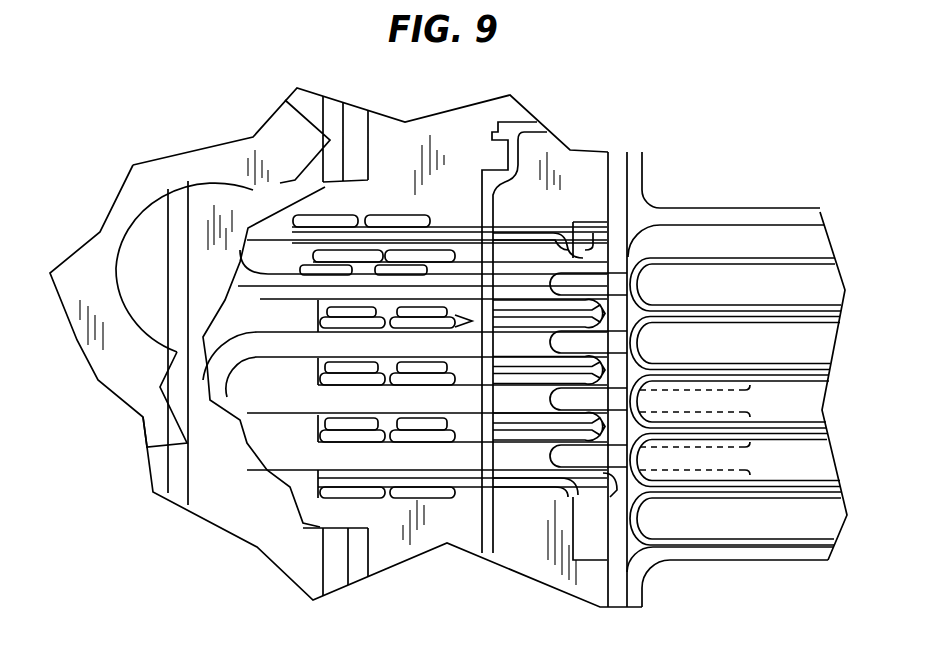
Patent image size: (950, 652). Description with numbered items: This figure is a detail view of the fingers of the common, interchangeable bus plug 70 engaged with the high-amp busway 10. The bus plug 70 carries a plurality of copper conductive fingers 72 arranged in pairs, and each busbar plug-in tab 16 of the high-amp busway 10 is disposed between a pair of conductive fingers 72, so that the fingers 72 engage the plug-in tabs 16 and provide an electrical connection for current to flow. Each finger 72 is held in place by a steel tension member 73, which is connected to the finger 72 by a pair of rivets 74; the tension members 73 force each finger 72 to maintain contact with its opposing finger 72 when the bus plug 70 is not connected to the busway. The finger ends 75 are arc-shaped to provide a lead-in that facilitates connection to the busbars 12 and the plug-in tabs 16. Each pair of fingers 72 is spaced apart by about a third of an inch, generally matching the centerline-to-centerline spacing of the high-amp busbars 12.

The high-amp busway 10 is at (742, 576).
The high-amp busbars 12 is at (830, 292).
The busbar plug-in tabs 16 is at (612, 287).
The bus plug 70 is at (228, 128).
The conductive fingers 72 is at (532, 477).
The tension member 73 is at (510, 483).
The rivets 74 is at (417, 310).
The finger ends 75 is at (600, 263).